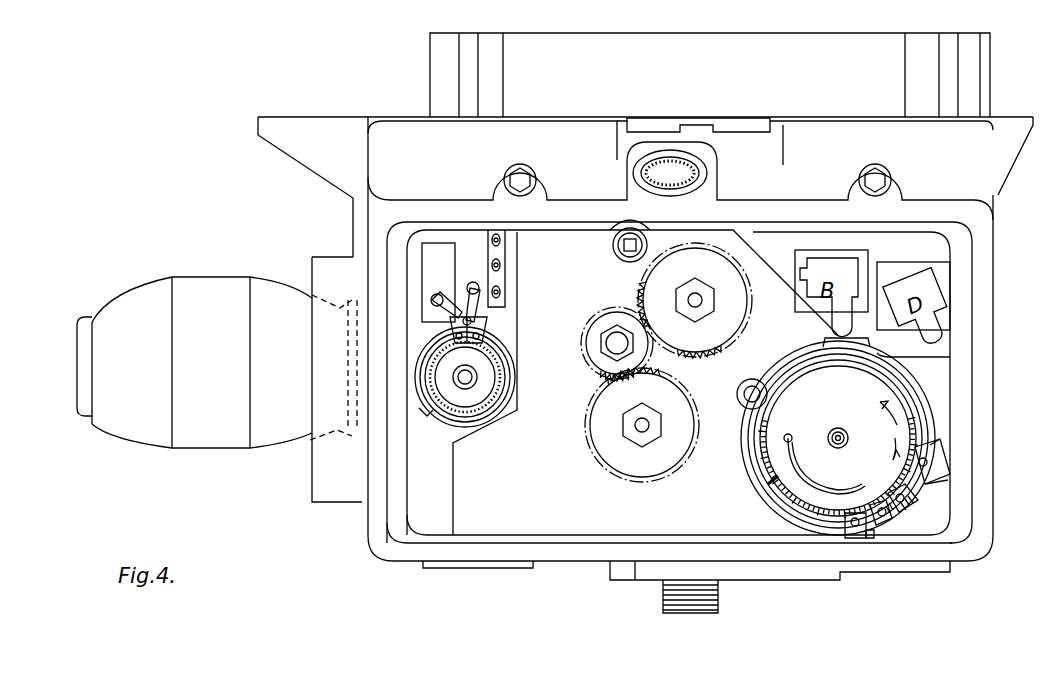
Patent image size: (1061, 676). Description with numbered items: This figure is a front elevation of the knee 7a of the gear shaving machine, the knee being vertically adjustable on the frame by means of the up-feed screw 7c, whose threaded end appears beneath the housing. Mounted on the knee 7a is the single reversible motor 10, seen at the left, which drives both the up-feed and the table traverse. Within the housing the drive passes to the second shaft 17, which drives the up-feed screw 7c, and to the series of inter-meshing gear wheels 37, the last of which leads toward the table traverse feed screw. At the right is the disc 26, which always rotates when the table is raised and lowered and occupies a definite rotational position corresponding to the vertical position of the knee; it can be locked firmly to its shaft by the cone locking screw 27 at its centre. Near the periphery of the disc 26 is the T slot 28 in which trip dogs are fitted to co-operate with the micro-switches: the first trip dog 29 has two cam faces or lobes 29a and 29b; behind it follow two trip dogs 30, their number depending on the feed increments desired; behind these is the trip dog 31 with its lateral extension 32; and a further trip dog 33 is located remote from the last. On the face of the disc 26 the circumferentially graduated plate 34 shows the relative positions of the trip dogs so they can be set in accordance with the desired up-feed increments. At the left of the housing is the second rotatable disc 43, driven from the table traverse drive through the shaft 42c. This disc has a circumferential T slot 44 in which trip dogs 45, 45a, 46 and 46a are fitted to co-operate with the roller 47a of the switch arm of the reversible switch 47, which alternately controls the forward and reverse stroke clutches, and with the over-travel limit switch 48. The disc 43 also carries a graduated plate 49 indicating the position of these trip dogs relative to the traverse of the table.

The knee 7a is at (445, 78).
The up-feed screw 7c is at (720, 593).
The reversible motor 10 is at (218, 366).
The second shaft 17 is at (747, 398).
The disc 26 is at (747, 452).
The cone locking screw 27 is at (832, 434).
The T slot 28 is at (760, 468).
The first trip dog 29 is at (933, 462).
The cam face 29a is at (942, 445).
The cam face 29b is at (935, 483).
The trip dogs 30 is at (897, 514).
The trip dog 31 is at (857, 535).
The lateral extension 32 is at (870, 535).
The further trip dog 33 is at (838, 342).
The circumferentially graduated plate 34 is at (775, 488).
The inter-meshing gear wheels 37 is at (670, 385).
The shaft 42c is at (469, 384).
The second rotatable disc 43 is at (512, 403).
The circumferential T slot 44 is at (512, 373).
The trip dog 45 is at (447, 317).
The trip dog 45a is at (488, 312).
The trip dog 46 is at (450, 335).
The trip dog 46a is at (488, 327).
The reversible switch 47 is at (473, 253).
The roller 47a is at (452, 327).
The over-travel limit switch 48 is at (442, 260).
The graduated plate 49 is at (448, 407).